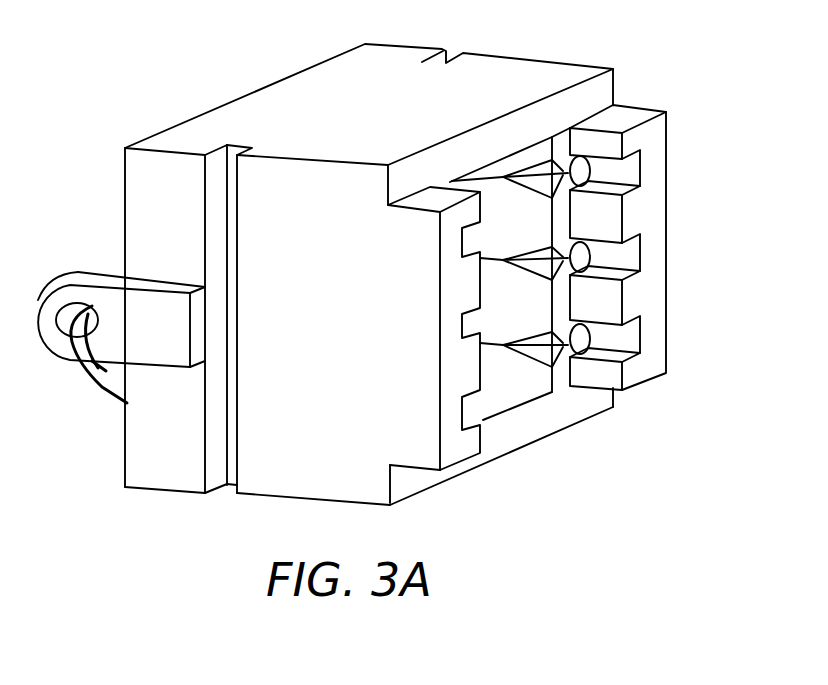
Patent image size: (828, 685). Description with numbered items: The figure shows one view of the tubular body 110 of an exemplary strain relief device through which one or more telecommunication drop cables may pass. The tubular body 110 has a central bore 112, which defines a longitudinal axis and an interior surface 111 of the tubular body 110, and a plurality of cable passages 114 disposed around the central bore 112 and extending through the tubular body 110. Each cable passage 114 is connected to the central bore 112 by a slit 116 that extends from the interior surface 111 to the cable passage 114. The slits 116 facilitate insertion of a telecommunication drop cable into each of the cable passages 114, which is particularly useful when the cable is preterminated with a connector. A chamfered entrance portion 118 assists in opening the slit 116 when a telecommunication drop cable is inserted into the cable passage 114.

The tubular body 110 is at (541, 51).
The interior surface 111 is at (520, 203).
The central bore 112 is at (556, 142).
The cable passage 114 is at (584, 336).
The slit 116 is at (490, 345).
The chamfered entrance portion 118 is at (547, 352).